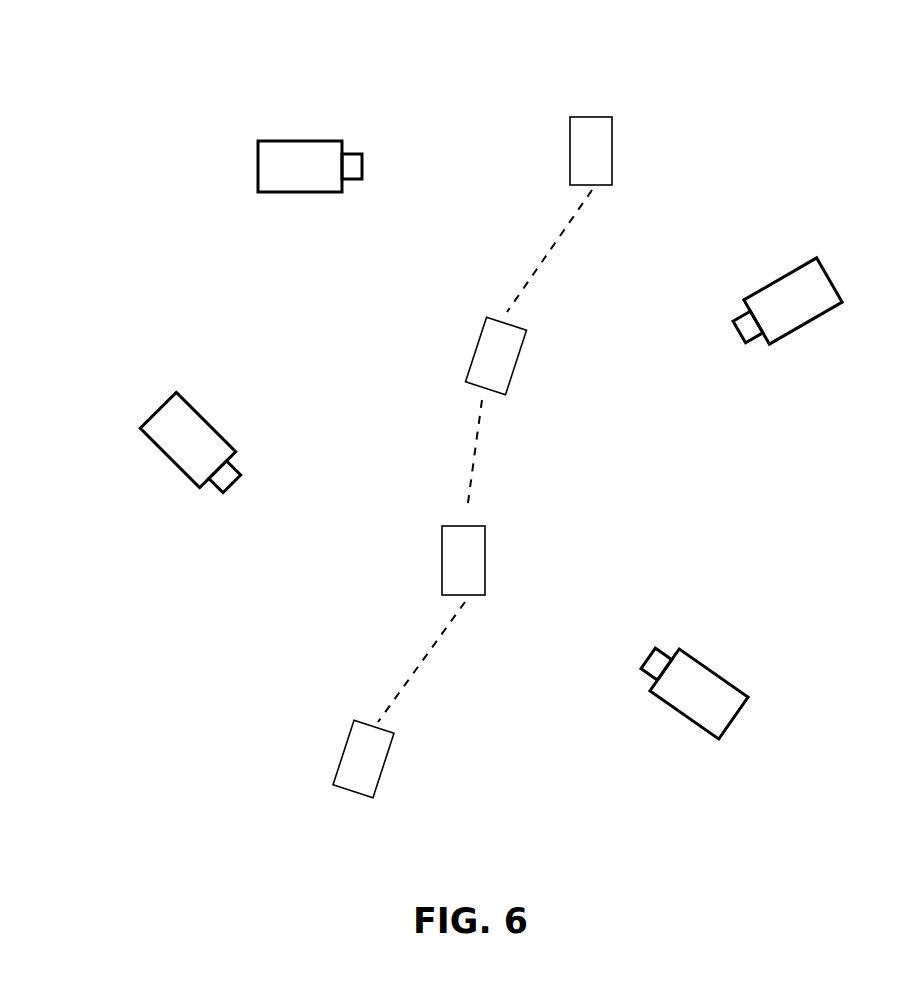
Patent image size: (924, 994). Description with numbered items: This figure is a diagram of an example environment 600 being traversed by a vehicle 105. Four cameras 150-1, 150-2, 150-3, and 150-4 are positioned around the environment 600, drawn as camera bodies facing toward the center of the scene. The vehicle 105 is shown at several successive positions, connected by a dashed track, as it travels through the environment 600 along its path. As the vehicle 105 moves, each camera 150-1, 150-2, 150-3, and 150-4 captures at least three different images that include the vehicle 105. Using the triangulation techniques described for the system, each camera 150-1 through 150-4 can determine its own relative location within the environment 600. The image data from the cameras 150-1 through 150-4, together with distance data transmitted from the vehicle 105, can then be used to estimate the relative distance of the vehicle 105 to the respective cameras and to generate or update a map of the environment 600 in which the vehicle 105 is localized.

The environment 600 is at (729, 80).
The camera 150-1 is at (300, 141).
The camera 150-2 is at (200, 410).
The camera 150-3 is at (795, 270).
The camera 150-4 is at (730, 680).
The vehicle 105 is at (472, 457).